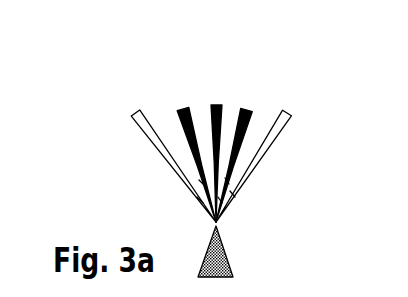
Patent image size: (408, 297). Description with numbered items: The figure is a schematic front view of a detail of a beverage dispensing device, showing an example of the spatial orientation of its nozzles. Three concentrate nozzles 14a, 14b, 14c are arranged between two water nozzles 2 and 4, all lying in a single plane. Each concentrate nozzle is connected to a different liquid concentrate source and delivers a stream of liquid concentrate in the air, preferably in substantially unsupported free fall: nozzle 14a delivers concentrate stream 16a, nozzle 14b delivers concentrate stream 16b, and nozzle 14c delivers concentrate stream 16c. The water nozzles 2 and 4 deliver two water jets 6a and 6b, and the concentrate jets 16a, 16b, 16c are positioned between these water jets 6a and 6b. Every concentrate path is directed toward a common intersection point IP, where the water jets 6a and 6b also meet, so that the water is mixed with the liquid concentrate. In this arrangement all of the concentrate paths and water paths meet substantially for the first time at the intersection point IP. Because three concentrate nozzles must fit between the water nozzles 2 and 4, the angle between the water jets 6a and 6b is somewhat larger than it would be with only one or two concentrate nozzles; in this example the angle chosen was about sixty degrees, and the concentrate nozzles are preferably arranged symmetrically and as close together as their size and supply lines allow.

The water nozzle 2 is at (150, 141).
The water nozzle 4 is at (270, 143).
The concentrate nozzle 14a is at (177, 113).
The concentrate nozzle 14b is at (211, 115).
The concentrate nozzle 14c is at (252, 113).
The concentrate stream 16a is at (202, 182).
The concentrate stream 16b is at (222, 200).
The concentrate stream 16c is at (227, 181).
The water jet 6a is at (200, 200).
The water jet 6b is at (232, 194).
The intersection point IP is at (219, 226).